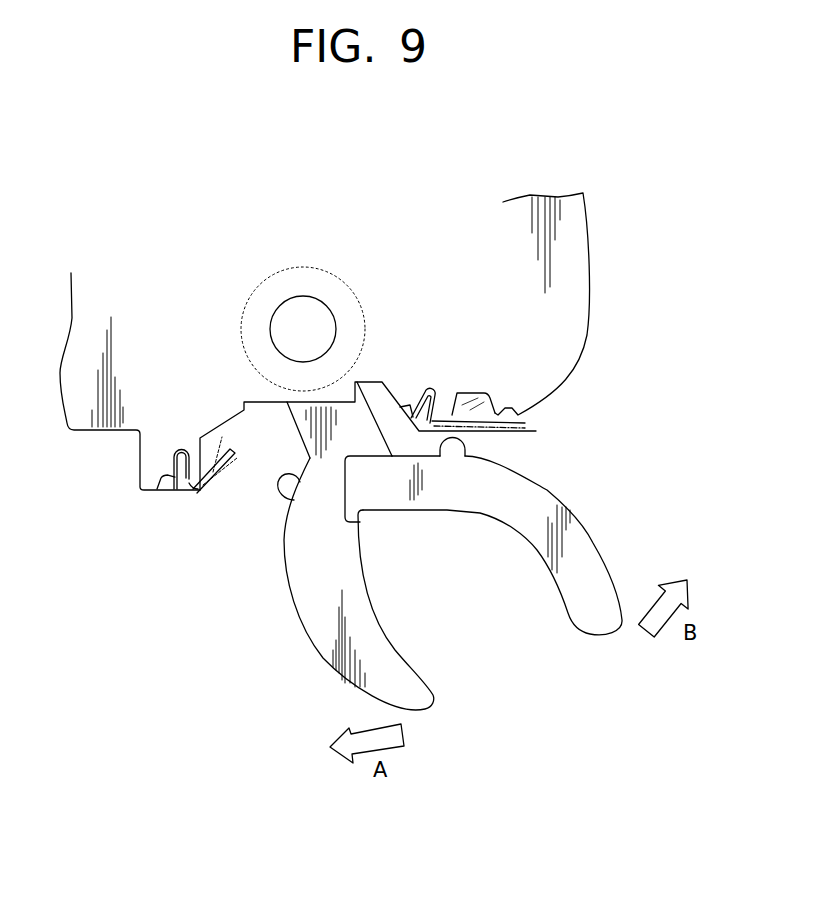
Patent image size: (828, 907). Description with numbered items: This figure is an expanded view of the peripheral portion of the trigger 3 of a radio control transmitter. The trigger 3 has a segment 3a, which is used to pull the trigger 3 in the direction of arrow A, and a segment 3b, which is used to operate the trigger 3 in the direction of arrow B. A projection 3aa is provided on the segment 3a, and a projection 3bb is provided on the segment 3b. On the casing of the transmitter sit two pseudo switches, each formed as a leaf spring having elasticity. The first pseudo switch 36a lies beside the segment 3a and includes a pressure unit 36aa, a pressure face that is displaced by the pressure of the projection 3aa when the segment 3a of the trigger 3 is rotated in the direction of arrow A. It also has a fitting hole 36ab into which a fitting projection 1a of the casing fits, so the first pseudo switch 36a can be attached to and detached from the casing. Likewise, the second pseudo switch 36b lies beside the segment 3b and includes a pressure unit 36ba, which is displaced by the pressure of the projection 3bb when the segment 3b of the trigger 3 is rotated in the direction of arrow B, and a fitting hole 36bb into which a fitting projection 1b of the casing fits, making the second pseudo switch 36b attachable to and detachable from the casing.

The trigger 3 is at (335, 437).
The segment 3a is at (337, 668).
The segment 3b is at (575, 568).
The projection 3aa is at (285, 475).
The projection 3bb is at (463, 441).
The fitting projection 1a is at (198, 493).
The fitting projection 1b is at (437, 412).
The first pseudo switch 36a is at (210, 492).
The pressure unit 36aa is at (207, 480).
The fitting hole 36ab is at (187, 491).
The second pseudo switch 36b is at (505, 427).
The pressure unit 36ba is at (452, 398).
The fitting hole 36bb is at (422, 394).